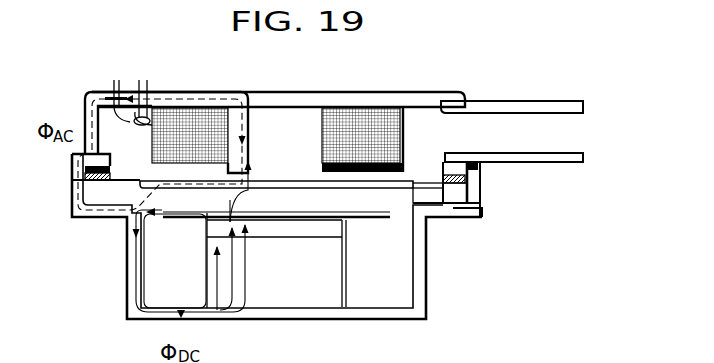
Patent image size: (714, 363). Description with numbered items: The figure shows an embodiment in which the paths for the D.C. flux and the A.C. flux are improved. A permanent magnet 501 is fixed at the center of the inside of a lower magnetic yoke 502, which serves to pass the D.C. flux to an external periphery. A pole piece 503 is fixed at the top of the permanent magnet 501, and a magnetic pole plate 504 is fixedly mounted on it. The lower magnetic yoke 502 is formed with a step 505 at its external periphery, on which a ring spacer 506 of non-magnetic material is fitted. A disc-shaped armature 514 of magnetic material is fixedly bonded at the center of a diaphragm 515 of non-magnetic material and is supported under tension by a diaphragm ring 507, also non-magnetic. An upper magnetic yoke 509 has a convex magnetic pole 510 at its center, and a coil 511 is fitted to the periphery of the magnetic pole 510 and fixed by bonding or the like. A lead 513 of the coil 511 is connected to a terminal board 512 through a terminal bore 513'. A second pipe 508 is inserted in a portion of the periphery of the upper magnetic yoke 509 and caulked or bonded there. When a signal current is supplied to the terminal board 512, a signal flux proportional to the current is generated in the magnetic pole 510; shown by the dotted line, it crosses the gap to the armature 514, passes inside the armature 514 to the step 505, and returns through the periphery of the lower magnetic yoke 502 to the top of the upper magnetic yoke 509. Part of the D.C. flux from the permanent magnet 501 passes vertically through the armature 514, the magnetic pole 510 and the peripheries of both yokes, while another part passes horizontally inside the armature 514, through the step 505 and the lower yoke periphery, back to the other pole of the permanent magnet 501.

The permanent magnet 501 is at (300, 293).
The lower magnetic yoke 502 is at (390, 320).
The pole piece 503 is at (335, 227).
The magnetic pole plate 504 is at (390, 218).
The step 505 is at (470, 212).
The ring spacer 506 is at (457, 197).
The diaphragm ring 507 is at (482, 180).
The second pipe 508 is at (532, 100).
The upper magnetic yoke 509 is at (348, 95).
The magnetic pole 510 is at (291, 94).
The coil 511 is at (386, 97).
The terminal board 512 is at (206, 92).
The lead 513 is at (105, 88).
The terminal bore 513' is at (159, 89).
The armature 514 is at (406, 182).
The diaphragm 515 is at (433, 190).